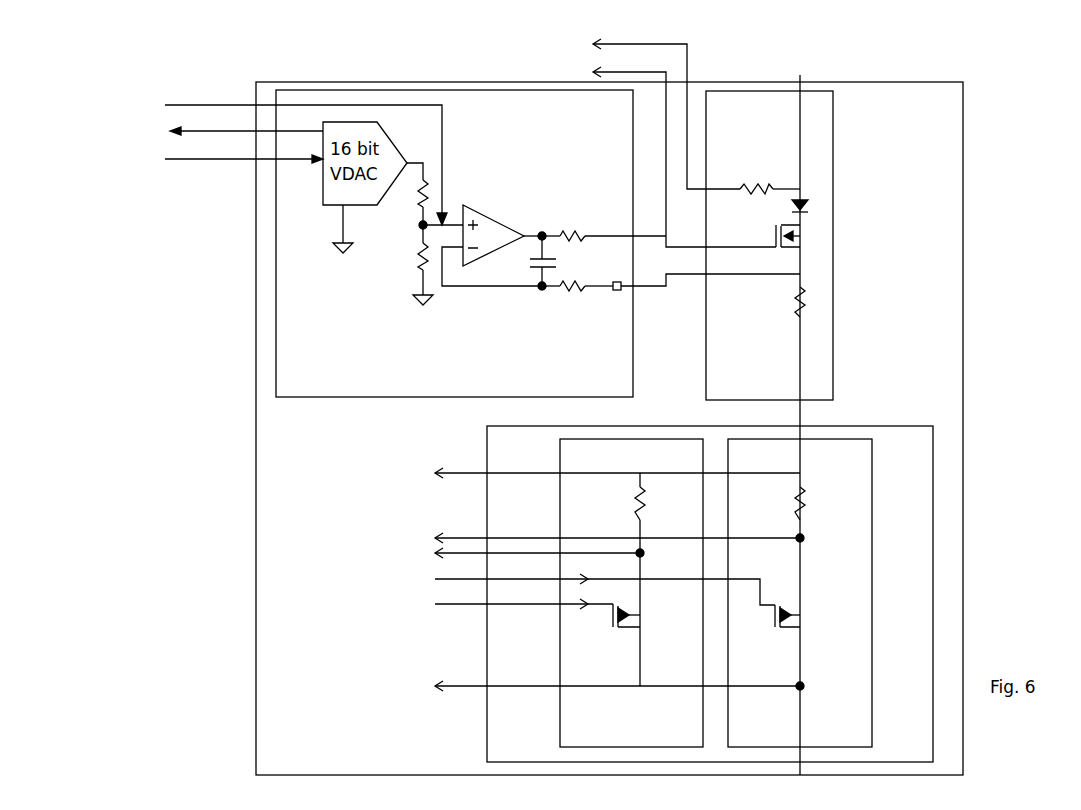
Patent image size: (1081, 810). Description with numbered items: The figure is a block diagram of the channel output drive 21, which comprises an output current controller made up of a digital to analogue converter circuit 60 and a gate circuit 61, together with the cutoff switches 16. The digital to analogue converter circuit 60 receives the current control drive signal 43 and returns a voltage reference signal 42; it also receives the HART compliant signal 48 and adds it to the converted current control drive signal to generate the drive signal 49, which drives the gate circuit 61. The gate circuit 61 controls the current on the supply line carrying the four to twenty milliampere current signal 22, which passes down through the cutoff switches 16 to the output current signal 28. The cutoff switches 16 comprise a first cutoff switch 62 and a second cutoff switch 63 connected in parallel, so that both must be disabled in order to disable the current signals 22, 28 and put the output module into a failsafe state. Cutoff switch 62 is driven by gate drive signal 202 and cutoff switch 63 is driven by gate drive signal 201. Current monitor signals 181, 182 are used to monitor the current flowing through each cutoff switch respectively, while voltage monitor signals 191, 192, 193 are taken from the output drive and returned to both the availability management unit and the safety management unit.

The cutoff switches 16 is at (710, 594).
The channel output drive 21 is at (609, 428).
The 4-20 mA current signal 22 is at (805, 236).
The 4-20 mA current signal 28 is at (801, 619).
The voltage reference signal 42 is at (232, 132).
The current control drive signal 43 is at (232, 160).
The HART compliant signal 48 is at (294, 160).
The drive signal 49 is at (671, 155).
The digital to analogue converter circuit 60 is at (454, 243).
The gate circuit 61 is at (769, 245).
The cutoff switch 62 is at (631, 593).
The cutoff switch 63 is at (800, 593).
The current monitor signal 181 is at (602, 539).
The current monitor signal 182 is at (522, 554).
The voltage monitor signal 191 is at (678, 114).
The voltage monitor signal 192 is at (600, 474).
The voltage monitor signal 193 is at (602, 687).
The gate drive signal 201 is at (588, 587).
The gate drive signal 202 is at (507, 605).